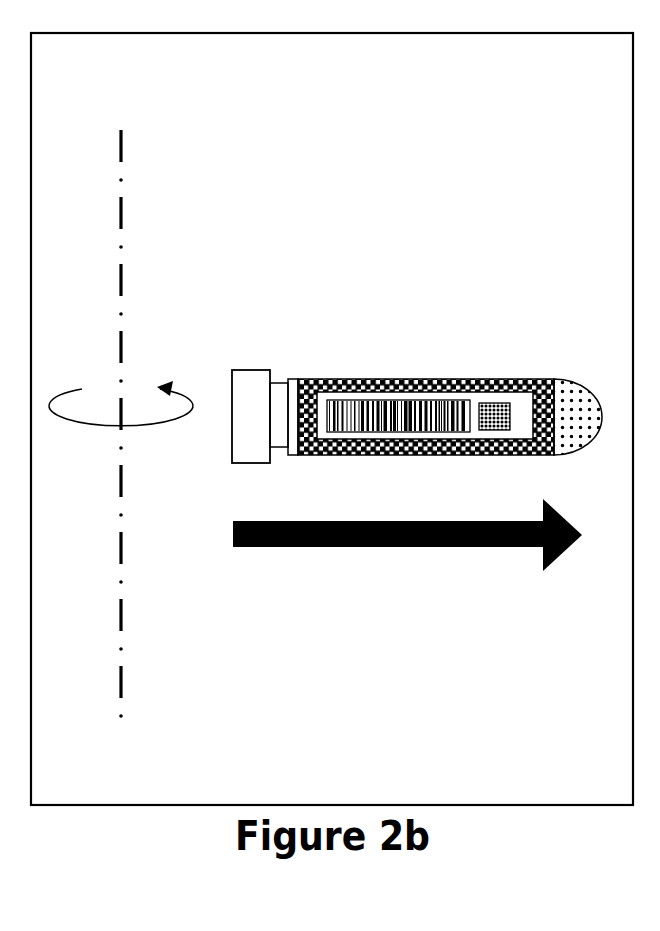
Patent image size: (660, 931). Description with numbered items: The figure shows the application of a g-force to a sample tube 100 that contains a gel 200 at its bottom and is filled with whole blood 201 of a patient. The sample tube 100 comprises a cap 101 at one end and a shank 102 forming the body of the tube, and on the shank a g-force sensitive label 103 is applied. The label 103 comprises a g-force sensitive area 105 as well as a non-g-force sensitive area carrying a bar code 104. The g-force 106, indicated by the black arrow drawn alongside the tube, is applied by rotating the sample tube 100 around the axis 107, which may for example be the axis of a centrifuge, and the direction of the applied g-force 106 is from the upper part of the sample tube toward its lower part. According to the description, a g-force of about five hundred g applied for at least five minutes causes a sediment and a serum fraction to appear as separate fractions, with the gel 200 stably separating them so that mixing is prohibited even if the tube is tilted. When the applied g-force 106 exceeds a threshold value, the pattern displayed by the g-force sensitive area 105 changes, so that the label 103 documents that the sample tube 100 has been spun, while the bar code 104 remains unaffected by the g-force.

The sample tube 100 is at (222, 424).
The cap 101 is at (250, 370).
The shank 102 is at (307, 378).
The g-force sensitive label 103 is at (348, 382).
The bar code 104 is at (384, 402).
The g-force sensitive area 105 is at (495, 403).
The g-force 106 is at (383, 548).
The axis 107 is at (122, 628).
The gel 200 is at (580, 430).
The whole blood 201 is at (525, 378).